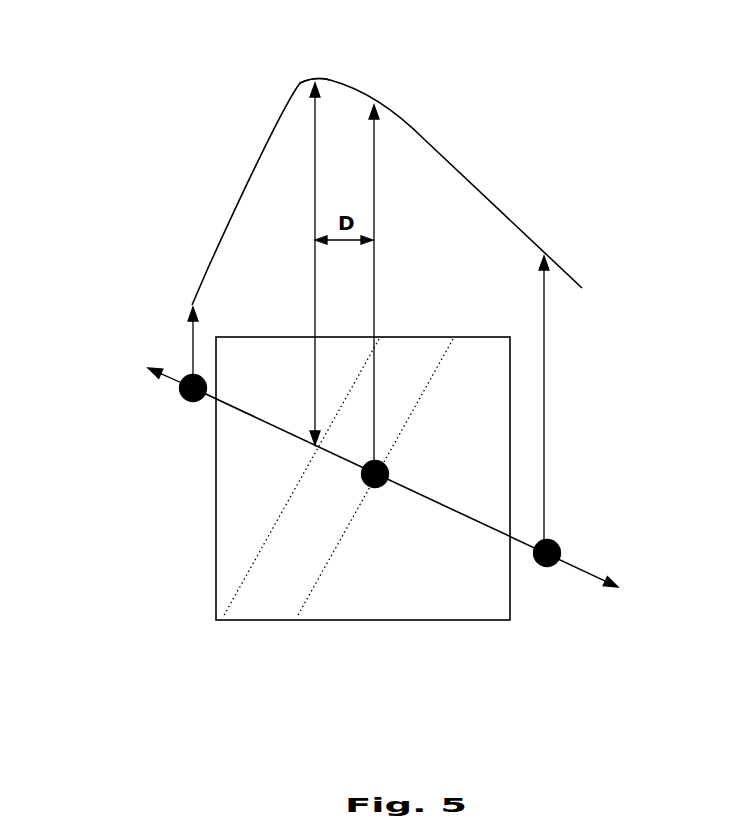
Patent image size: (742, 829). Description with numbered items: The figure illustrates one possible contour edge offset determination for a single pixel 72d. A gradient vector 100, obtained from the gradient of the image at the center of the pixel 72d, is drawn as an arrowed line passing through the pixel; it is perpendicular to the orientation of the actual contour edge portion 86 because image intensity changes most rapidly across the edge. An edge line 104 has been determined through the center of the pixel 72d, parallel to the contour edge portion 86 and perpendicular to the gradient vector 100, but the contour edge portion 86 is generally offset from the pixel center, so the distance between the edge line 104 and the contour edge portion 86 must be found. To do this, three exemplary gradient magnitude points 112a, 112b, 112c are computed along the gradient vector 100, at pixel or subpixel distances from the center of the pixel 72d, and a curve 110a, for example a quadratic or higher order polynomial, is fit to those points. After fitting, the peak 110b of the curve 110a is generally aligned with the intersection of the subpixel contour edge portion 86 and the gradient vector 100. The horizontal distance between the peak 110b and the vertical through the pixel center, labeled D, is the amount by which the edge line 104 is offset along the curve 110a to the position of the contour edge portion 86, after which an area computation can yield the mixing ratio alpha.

The curve 110a is at (518, 228).
The peak of the curve 110b is at (328, 66).
The pixel 72d is at (480, 618).
The contour edge portion 86 is at (245, 542).
The edge line 104 is at (329, 602).
The gradient vector 100 is at (597, 572).
The gradient magnitude point 112a is at (553, 543).
The gradient magnitude point 112b is at (388, 464).
The gradient magnitude point 112c is at (183, 402).